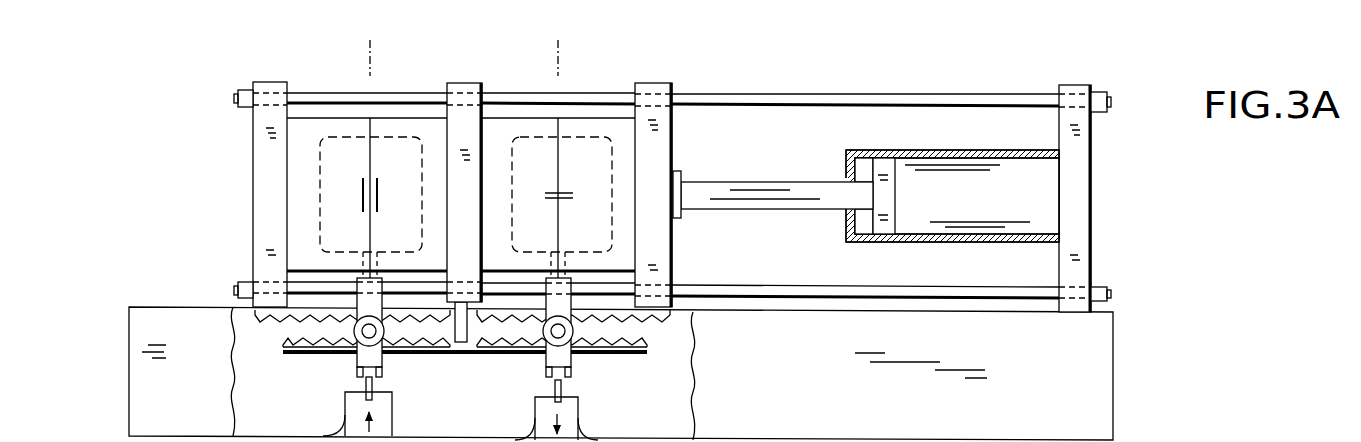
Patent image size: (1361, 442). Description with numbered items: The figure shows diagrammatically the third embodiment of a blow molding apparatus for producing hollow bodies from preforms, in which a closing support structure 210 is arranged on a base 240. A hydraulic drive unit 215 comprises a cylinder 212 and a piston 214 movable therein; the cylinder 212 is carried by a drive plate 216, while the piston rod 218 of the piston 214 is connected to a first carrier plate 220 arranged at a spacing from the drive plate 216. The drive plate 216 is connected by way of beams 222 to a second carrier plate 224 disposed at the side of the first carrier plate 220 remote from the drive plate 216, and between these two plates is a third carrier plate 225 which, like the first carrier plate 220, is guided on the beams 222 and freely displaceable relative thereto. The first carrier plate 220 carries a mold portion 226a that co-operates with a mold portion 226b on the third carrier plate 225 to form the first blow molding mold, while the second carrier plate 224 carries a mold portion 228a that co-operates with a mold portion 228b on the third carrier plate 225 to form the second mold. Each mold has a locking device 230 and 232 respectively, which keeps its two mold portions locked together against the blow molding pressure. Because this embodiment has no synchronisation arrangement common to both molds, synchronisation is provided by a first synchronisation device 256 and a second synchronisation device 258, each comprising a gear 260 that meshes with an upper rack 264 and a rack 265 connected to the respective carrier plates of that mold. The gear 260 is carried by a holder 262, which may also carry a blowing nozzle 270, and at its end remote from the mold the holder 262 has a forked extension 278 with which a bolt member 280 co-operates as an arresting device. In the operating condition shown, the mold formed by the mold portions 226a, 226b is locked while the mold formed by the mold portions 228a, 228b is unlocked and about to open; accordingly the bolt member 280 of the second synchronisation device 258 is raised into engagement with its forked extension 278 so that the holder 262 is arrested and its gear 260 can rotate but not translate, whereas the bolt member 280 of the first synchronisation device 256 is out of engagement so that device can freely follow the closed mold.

The closing support structure 210 is at (810, 88).
The cylinder 212 is at (955, 217).
The piston 214 is at (887, 192).
The drive unit 215 is at (1007, 140).
The drive plate 216 is at (1080, 137).
The piston rod 218 is at (765, 196).
The first carrier plate 220 is at (660, 128).
The beams 222 is at (872, 98).
The second carrier plate 224 is at (265, 136).
The third carrier plate 225 is at (462, 130).
The mold portion 226a is at (607, 128).
The mold portion 226b is at (523, 130).
The mold portion 228a is at (338, 123).
The mold portion 228b is at (397, 128).
The locking device 230 is at (565, 190).
The locking device 232 is at (380, 190).
The base 240 is at (1078, 376).
The first synchronisation device 256 is at (667, 372).
The second synchronisation device 258 is at (263, 371).
The gear 260 is at (367, 333).
The holder 262 is at (368, 287).
The upper rack 264 is at (303, 311).
The rack 265 is at (508, 346).
The blowing nozzle 270 is at (377, 252).
The forked extension 278 is at (382, 373).
The bolt member 280 is at (370, 398).